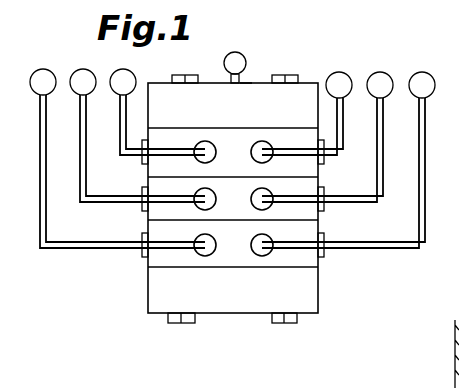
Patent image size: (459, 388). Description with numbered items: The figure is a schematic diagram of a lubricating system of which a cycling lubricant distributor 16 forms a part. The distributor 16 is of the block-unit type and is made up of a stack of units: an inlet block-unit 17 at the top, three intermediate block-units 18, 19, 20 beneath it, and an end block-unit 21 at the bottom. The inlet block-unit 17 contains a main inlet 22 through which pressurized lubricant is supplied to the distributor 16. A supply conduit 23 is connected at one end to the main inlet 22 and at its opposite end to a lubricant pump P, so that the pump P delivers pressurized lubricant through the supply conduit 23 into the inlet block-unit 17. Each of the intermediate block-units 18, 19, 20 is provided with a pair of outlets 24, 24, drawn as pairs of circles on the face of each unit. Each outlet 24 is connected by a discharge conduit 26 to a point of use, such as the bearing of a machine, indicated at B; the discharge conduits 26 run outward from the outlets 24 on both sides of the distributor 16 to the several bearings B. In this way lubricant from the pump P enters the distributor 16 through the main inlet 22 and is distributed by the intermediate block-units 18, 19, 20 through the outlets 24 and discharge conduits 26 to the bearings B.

The cycling lubricant distributor 16 is at (228, 314).
The inlet block-unit 17 is at (146, 82).
The intermediate block-unit 18 is at (147, 175).
The intermediate block-unit 19 is at (147, 217).
The intermediate block-unit 20 is at (147, 260).
The end block-unit 21 is at (147, 290).
The main inlet 22 is at (247, 81).
The supply conduit 23 is at (226, 81).
The outlets 24 is at (253, 152).
The discharge conduit 26 is at (45, 148).
The bearing B is at (232, 83).
The lubricant pump P is at (235, 63).